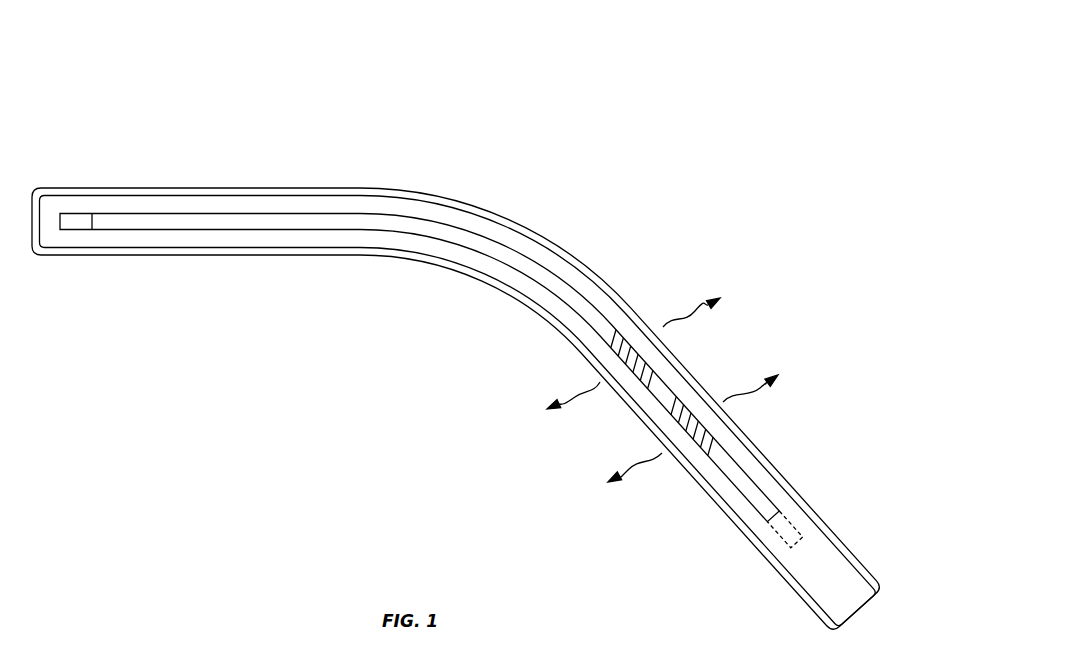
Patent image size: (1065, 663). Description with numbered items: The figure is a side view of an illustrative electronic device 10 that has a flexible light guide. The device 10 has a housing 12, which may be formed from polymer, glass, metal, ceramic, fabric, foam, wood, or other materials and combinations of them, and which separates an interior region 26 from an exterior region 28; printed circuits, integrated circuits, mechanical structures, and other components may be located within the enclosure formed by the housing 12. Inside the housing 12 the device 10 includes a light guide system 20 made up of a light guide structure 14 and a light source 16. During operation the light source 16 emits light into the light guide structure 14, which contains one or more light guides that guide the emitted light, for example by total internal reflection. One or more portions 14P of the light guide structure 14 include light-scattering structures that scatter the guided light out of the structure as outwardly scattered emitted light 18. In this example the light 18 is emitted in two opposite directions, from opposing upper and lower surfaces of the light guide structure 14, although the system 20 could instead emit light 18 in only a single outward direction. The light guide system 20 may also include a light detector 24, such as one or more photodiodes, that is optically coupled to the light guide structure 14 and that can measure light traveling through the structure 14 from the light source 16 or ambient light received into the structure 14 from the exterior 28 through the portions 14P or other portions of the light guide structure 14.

The device 10 is at (483, 314).
The housing 12 is at (876, 577).
The light guide structure 14 is at (188, 221).
The portions 14P is at (617, 338).
The light source 16 is at (76, 222).
The outwardly scattered emitted light 18 is at (683, 313).
The light guide system 20 is at (122, 212).
The light detector 24 is at (797, 550).
The interior region 26 is at (516, 257).
The exterior region 28 is at (387, 143).